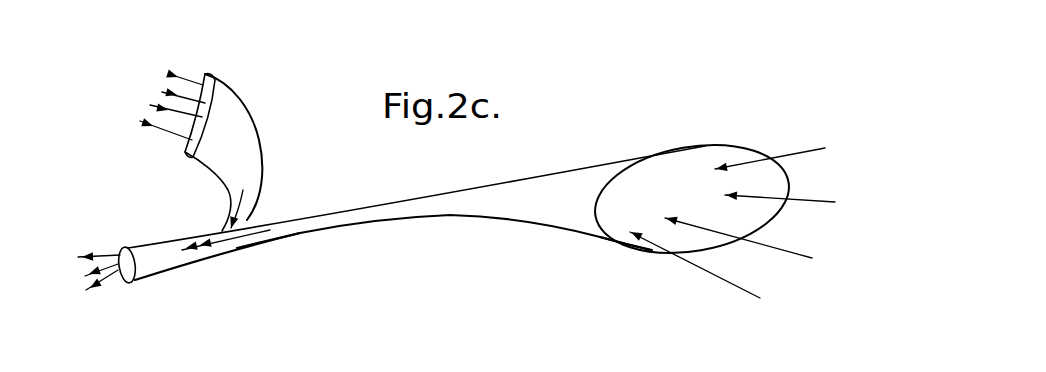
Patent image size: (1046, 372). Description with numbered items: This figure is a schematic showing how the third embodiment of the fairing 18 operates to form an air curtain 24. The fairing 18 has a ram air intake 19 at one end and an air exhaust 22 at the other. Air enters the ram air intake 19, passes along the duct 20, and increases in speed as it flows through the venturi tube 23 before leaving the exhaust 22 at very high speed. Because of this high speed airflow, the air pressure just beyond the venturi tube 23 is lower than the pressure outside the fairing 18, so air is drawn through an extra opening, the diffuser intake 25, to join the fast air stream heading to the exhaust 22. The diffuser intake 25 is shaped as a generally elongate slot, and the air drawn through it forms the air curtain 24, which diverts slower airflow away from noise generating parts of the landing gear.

The fairing 18 is at (433, 207).
The ram air intake 19 is at (708, 145).
The duct 20 is at (538, 225).
The air exhaust 22 is at (138, 272).
The venturi tube 23 is at (310, 233).
The air curtain 24 is at (192, 82).
The diffuser intake 25 is at (252, 118).